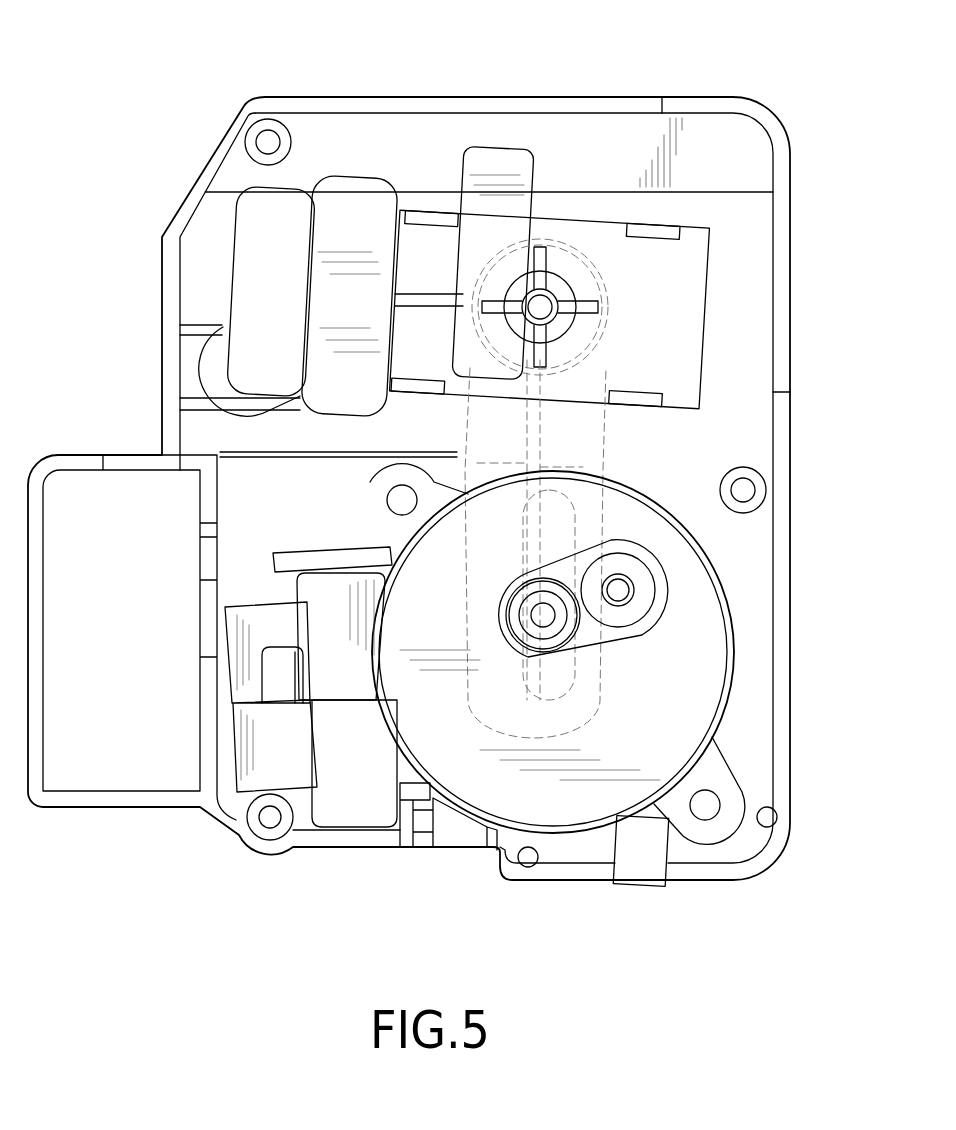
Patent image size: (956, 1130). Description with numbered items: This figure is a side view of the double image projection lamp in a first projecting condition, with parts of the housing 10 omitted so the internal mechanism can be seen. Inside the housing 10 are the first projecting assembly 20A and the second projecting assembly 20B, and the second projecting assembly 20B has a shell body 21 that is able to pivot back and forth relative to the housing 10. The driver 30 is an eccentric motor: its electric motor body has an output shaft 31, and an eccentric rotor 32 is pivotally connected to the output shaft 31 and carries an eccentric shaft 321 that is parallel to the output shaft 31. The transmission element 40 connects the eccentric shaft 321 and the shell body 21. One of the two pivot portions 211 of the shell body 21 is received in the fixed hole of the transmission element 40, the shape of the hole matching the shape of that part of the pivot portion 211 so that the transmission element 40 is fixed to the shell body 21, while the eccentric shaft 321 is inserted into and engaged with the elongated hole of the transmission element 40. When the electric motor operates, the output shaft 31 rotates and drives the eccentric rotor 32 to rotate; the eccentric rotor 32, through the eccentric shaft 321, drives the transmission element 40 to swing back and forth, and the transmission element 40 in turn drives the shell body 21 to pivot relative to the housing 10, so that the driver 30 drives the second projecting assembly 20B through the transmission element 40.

The housing 10 is at (258, 92).
The shell body 21 is at (370, 176).
The second projecting assembly 20B is at (535, 149).
The first projecting assembly 20A is at (275, 543).
The pivot portion 211 is at (550, 318).
The transmission element 40 is at (603, 427).
The driver 30 is at (730, 718).
The eccentric rotor 32 is at (673, 580).
The output shaft 31 is at (618, 590).
The eccentric shaft 321 is at (543, 615).